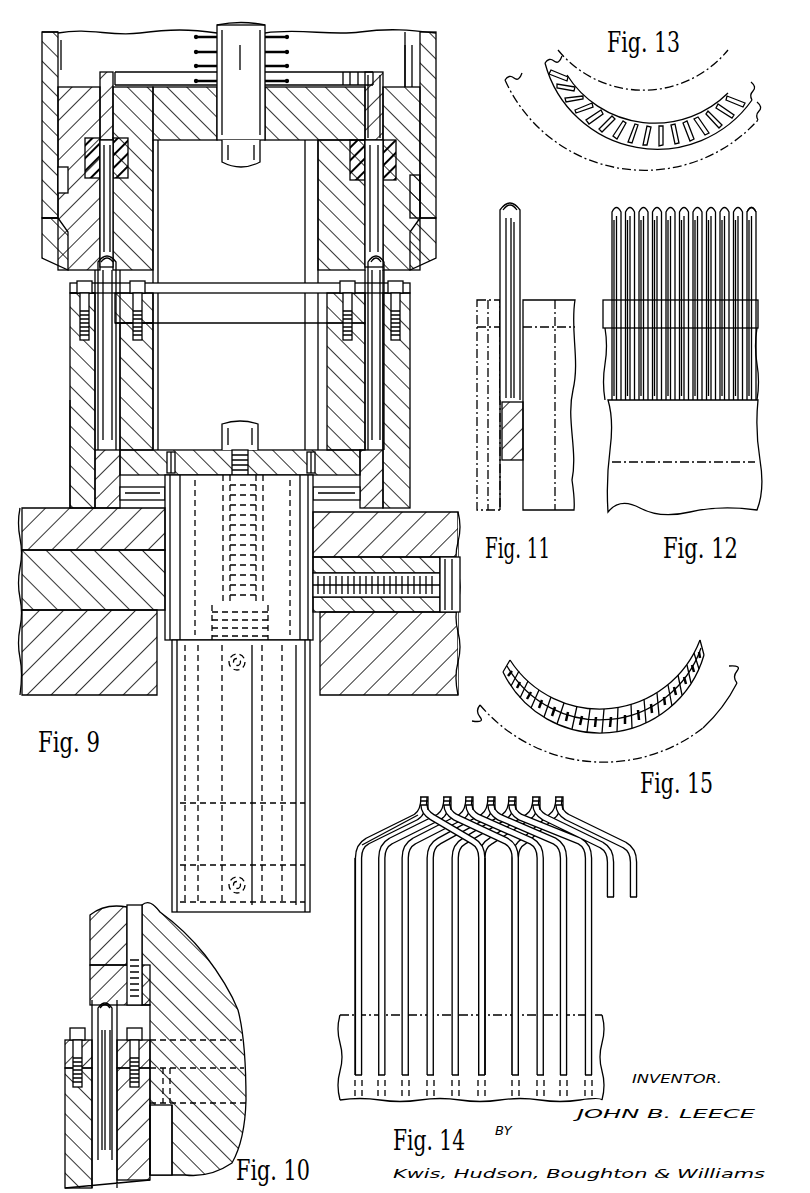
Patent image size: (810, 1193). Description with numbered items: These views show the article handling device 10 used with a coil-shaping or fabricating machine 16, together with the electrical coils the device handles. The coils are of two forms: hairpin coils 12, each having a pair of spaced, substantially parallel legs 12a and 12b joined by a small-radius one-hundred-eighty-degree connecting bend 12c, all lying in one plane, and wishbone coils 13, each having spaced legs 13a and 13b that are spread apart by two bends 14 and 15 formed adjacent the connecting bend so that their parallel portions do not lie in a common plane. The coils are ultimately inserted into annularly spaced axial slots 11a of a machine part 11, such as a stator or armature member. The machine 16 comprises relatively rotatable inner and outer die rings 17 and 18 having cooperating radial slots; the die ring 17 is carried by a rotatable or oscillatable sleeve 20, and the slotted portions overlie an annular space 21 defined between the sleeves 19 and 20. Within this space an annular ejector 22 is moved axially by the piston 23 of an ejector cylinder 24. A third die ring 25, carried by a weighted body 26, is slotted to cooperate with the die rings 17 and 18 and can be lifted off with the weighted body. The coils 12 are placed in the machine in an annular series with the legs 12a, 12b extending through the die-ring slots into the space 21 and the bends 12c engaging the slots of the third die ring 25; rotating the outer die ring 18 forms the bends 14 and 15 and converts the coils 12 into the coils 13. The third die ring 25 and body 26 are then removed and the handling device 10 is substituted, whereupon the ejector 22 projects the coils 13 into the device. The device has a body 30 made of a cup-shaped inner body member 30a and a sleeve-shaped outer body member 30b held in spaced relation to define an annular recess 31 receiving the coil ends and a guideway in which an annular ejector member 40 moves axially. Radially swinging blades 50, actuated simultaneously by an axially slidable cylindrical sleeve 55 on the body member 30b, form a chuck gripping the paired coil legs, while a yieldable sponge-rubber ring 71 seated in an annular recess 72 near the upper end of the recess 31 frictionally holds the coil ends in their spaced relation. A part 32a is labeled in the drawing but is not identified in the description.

In FIG. 9, the article handling device 10 is at (42, 107).
In FIG. 15, the machine part 11 is at (712, 706).
In FIG. 14, the machine part 11 is at (600, 1050).
In FIG. 14, the axial slots 11a is at (600, 1082).
In FIG. 9, the electrical coils 12 is at (118, 262).
In FIG. 10, the electrical coils 12 is at (96, 1015).
In FIG. 11, the electrical coils 12 is at (520, 242).
In FIG. 12, the electrical coils 12 is at (740, 248).
In FIG. 13, the electrical coils 12 is at (748, 86).
In FIG. 9, the leg 12a is at (116, 365).
In FIG. 10, the leg 12a is at (112, 1120).
In FIG. 11, the leg 12a is at (505, 246).
In FIG. 9, the leg 12b is at (98, 355).
In FIG. 10, the leg 12b is at (92, 1106).
In FIG. 11, the leg 12b is at (517, 270).
In FIG. 9, the connecting bend 12c is at (120, 247).
In FIG. 10, the connecting bend 12c is at (92, 997).
In FIG. 11, the connecting bend 12c is at (512, 208).
In FIG. 12, the connecting bend 12c is at (752, 210).
In FIG. 15, the electrical coils 13 is at (585, 712).
In FIG. 14, the electrical coils 13 is at (578, 832).
In FIG. 14, the leg 13a is at (423, 797).
In FIG. 14, the leg 13b is at (484, 966).
In FIG. 14, the bend 14 is at (421, 806).
In FIG. 14, the bend 15 is at (358, 850).
In FIG. 9, the coil-shaping machine 16 is at (67, 408).
In FIG. 9, the inner die ring 17 is at (153, 298).
In FIG. 10, the inner die ring 17 is at (240, 1040).
In FIG. 11, the inner die ring 17 is at (555, 305).
In FIG. 13, the inner die ring 17 is at (666, 98).
In FIG. 9, the outer die ring 18 is at (74, 308).
In FIG. 10, the outer die ring 18 is at (66, 1055).
In FIG. 11, the outer die ring 18 is at (496, 300).
In FIG. 13, the outer die ring 18 is at (730, 148).
In FIG. 9, the sleeve 19 is at (150, 386).
In FIG. 9, the rotatable sleeve 20 is at (80, 385).
In FIG. 9, the annular space 21 is at (92, 425).
In FIG. 10, the annular space 21 is at (80, 1130).
In FIG. 11, the annular space 21 is at (498, 381).
In FIG. 9, the annular ejector 22 is at (96, 475).
In FIG. 11, the annular ejector 22 is at (502, 436).
In FIG. 9, the piston 23 is at (285, 820).
In FIG. 9, the ejector cylinder 24 is at (306, 750).
In FIG. 10, the third die ring 25 is at (90, 973).
In FIG. 10, the weighted body 26 is at (212, 978).
In FIG. 9, the body 30 is at (310, 78).
In FIG. 9, the body member 30a is at (338, 95).
In FIG. 9, the body member 30b is at (424, 84).
In FIG. 9, the annular recess 31 is at (112, 215).
In FIG. 9, the bolt 32a is at (262, 22).
In FIG. 9, the annular ejector member 40 is at (372, 118).
In FIG. 9, the blades 50 is at (56, 253).
In FIG. 9, the cylindrical sleeve 55 is at (436, 150).
In FIG. 9, the ring 71 is at (86, 152).
In FIG. 9, the annular recess 72 is at (127, 165).